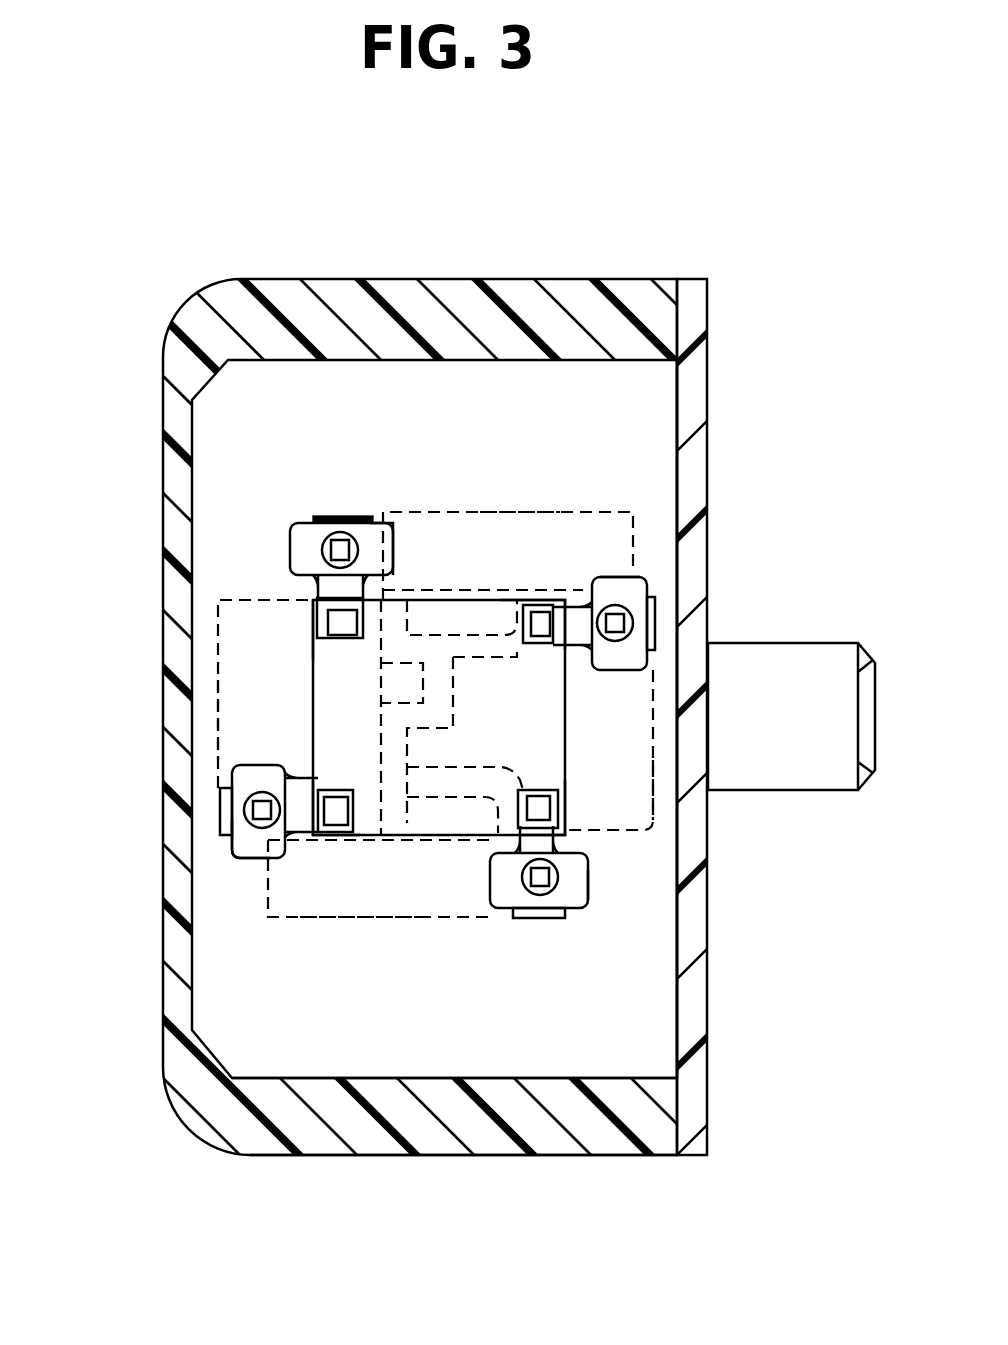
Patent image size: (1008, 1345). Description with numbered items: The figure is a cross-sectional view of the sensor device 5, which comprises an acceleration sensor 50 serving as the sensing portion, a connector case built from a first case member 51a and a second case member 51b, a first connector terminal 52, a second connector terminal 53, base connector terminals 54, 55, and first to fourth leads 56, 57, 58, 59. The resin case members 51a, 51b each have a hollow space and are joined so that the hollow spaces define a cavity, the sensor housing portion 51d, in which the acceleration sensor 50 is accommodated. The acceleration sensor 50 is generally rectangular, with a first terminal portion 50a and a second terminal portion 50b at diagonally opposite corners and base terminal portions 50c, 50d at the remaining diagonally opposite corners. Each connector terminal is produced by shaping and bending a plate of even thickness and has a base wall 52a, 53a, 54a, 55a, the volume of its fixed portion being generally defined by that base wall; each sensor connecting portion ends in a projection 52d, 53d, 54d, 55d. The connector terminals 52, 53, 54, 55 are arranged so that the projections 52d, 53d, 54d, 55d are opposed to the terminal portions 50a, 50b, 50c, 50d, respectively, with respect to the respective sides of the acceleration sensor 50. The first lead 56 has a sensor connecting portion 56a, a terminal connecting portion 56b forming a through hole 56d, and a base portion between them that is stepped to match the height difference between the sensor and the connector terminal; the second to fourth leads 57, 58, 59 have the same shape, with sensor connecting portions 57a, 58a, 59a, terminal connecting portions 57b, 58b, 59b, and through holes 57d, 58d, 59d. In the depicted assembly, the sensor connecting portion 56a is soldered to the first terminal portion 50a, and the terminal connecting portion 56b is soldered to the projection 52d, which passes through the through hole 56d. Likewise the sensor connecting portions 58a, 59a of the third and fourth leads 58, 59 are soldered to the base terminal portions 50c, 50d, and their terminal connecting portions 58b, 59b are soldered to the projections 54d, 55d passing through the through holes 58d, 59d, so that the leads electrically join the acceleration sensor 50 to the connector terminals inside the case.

The sensor device 5 is at (785, 280).
The acceleration sensor 50 is at (443, 653).
The first terminal portion 50a is at (313, 620).
The second terminal portion 50b is at (560, 815).
The base terminal portion 50c is at (313, 837).
The base terminal portion 50d is at (548, 600).
The first case member 51a is at (697, 1110).
The second case member 51b is at (487, 1135).
The sensor housing portion 51d is at (320, 1043).
The first connector terminal 52 is at (448, 513).
The base wall 52a is at (495, 537).
The projection 52d is at (341, 542).
The second connector terminal 53 is at (420, 920).
The base wall 53a is at (353, 895).
The projection 53d is at (535, 902).
The base connector terminal 54 is at (218, 668).
The base wall 54a is at (243, 704).
The projection 54d is at (228, 812).
The base connector terminal 55 is at (675, 667).
The base wall 55a is at (623, 787).
The projection 55d is at (656, 620).
The first lead 56 is at (290, 540).
The sensor connecting portion 56a is at (345, 623).
The terminal connecting portion 56b is at (370, 543).
The through hole 56d is at (328, 548).
The second lead 57 is at (573, 910).
The sensor connecting portion 57a is at (537, 800).
The terminal connecting portion 57b is at (573, 882).
The through hole 57d is at (517, 883).
The third lead 58 is at (237, 860).
The sensor connecting portion 58a is at (333, 797).
The terminal connecting portion 58b is at (243, 838).
The through hole 58d is at (258, 776).
The fourth lead 59 is at (645, 590).
The sensor connecting portion 59a is at (533, 650).
The terminal connecting portion 59b is at (610, 587).
The through hole 59d is at (607, 670).